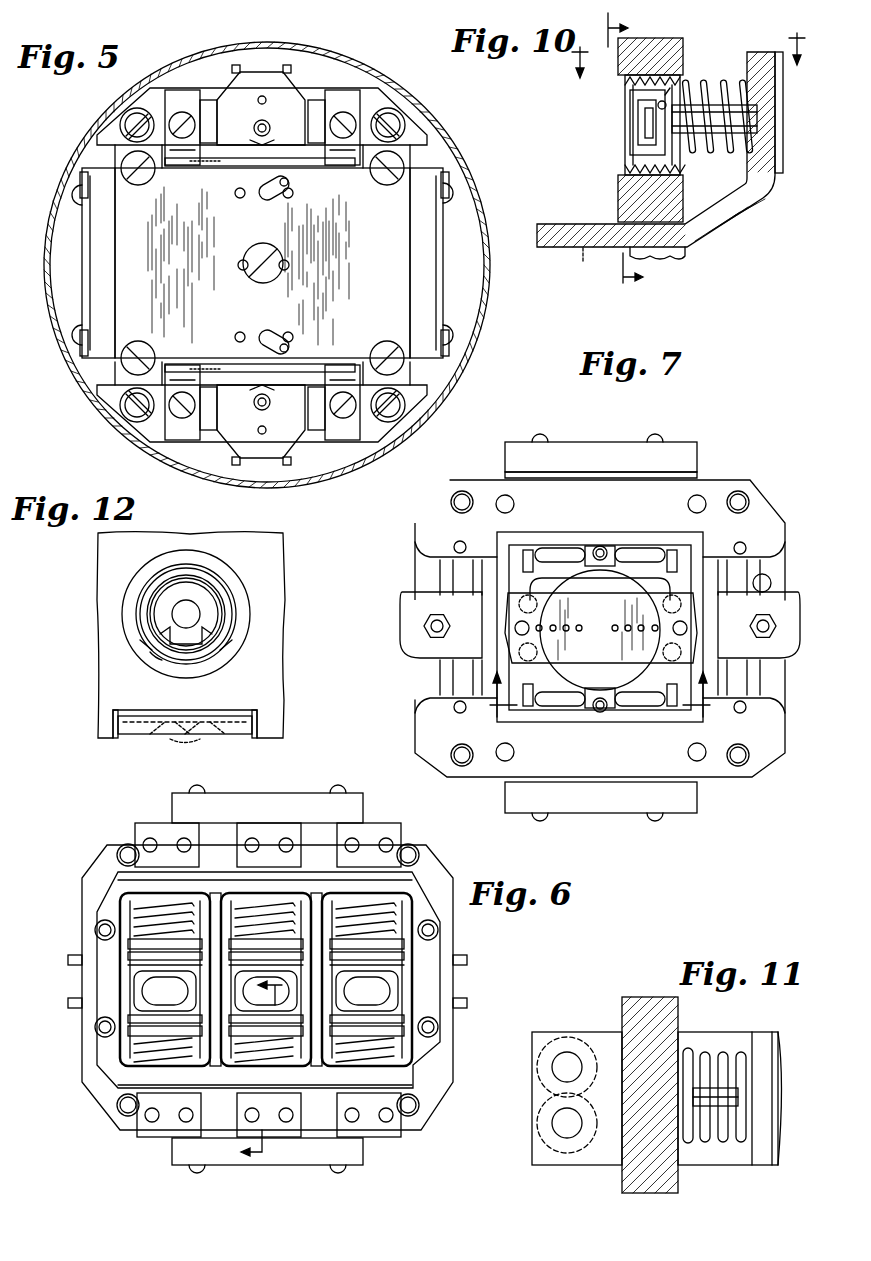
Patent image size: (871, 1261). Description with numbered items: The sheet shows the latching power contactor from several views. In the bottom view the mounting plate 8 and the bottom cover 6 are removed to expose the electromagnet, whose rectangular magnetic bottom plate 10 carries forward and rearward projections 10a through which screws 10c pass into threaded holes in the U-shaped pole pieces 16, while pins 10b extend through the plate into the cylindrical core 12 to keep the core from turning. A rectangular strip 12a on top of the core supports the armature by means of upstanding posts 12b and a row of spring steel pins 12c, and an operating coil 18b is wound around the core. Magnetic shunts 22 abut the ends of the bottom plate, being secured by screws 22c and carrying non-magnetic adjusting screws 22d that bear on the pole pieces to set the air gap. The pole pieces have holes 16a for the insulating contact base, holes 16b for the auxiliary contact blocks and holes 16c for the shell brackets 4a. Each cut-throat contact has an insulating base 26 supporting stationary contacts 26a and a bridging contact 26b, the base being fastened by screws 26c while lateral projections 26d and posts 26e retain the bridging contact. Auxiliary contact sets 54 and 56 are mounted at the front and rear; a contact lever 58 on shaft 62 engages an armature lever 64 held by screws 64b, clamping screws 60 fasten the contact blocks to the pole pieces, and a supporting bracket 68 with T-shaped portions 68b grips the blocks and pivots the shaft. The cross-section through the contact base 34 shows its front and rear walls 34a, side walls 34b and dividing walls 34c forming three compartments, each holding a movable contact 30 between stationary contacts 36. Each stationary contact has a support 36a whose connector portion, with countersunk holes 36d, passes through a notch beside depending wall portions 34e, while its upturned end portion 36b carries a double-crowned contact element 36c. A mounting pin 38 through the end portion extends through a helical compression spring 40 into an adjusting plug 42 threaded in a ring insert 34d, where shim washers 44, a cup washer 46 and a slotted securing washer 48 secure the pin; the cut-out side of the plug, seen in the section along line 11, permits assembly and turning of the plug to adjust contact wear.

In FIG. 5, the brackets 4a is at (105, 133).
In FIG. 5, the bottom cover 6 is at (486, 292).
In FIG. 7, the mounting plate 8 is at (600, 686).
In FIG. 5, the bottom plate 10 is at (188, 261).
In FIG. 6, the bottom plate 10 is at (271, 1067).
In FIG. 5, the projections 10a is at (118, 163).
In FIG. 5, the pins 10b is at (252, 272).
In FIG. 5, the screws 10c is at (140, 185).
In FIG. 7, the screws 10c is at (505, 500).
In FIG. 10, the section line 11- 11 is at (690, 47).
In FIG. 10, the magnetic core 12 is at (617, 146).
In FIG. 7, the strip 12a is at (612, 615).
In FIG. 7, the posts 12b is at (528, 632).
In FIG. 7, the spring steel pins 12c is at (628, 632).
In FIG. 5, the pole pieces 16 is at (356, 85).
In FIG. 7, the pole pieces 16 is at (785, 537).
In FIG. 6, the pole pieces 16 is at (98, 866).
In FIG. 7, the holes 16a is at (770, 583).
In FIG. 7, the holes 16b is at (458, 542).
In FIG. 7, the holes 16c is at (462, 494).
In FIG. 6, the holes 16c is at (120, 850).
In FIG. 7, the operating coil 18b is at (612, 588).
In FIG. 5, the magnetic shunts 22 is at (82, 265).
In FIG. 7, the magnetic shunts 22 is at (600, 442).
In FIG. 6, the magnetic shunts 22 is at (262, 793).
In FIG. 5, the screws 22c is at (80, 178).
In FIG. 5, the adjusting screws 22d is at (72, 195).
In FIG. 7, the adjusting screws 22d is at (540, 434).
In FIG. 6, the adjusting screws 22d is at (197, 790).
In FIG. 7, the insulating base 26 is at (497, 585).
In FIG. 7, the stationary contacts 26a is at (536, 548).
In FIG. 7, the bridging contact 26b is at (560, 708).
In FIG. 5, the screws 26c is at (240, 198).
In FIG. 7, the screws 26c is at (518, 650).
In FIG. 7, the lateral projections 26d is at (600, 545).
In FIG. 7, the posts 26e is at (625, 710).
In FIG. 6, the movable contacts 30 is at (150, 997).
In FIG. 6, the contact base 34 is at (98, 912).
In FIG. 6, the front and rear walls 34a is at (112, 975).
In FIG. 10, the side walls 34b is at (630, 208).
In FIG. 12, the side walls 34b is at (100, 560).
In FIG. 6, the side walls 34b is at (238, 893).
In FIG. 11, the side walls 34b is at (656, 1010).
In FIG. 6, the dividing walls 34c is at (316, 902).
In FIG. 10, the ring inserts 34d is at (632, 180).
In FIG. 12, the ring inserts 34d is at (123, 613).
In FIG. 10, the depending wall portions 34e is at (688, 254).
In FIG. 12, the depending wall portions 34e is at (100, 728).
In FIG. 10, the stationary contacts 36 is at (793, 228).
In FIG. 11, the stationary contacts 36 is at (785, 1045).
In FIG. 10, the contact support 36a is at (553, 225).
In FIG. 12, the contact support 36a is at (145, 735).
In FIG. 6, the contact support 36a is at (150, 826).
In FIG. 11, the contact support 36a is at (592, 1032).
In FIG. 10, the end portion 36b is at (762, 52).
In FIG. 11, the end portion 36b is at (760, 1035).
In FIG. 10, the contact element 36c is at (785, 170).
In FIG. 11, the contact element 36c is at (781, 1082).
In FIG. 10, the countersunk holes 36d is at (582, 252).
In FIG. 12, the countersunk holes 36d is at (200, 737).
In FIG. 11, the countersunk holes 36d is at (553, 1068).
In FIG. 10, the mounting pin 38 is at (718, 134).
In FIG. 12, the mounting pin 38 is at (192, 614).
In FIG. 11, the mounting pin 38 is at (728, 1060).
In FIG. 10, the helical compression spring 40 is at (720, 80).
In FIG. 11, the helical compression spring 40 is at (690, 1048).
In FIG. 10, the adjusting plug 42 is at (640, 86).
In FIG. 12, the adjusting plug 42 is at (220, 630).
In FIG. 10, the shim washers 44 is at (668, 98).
In FIG. 10, the cup washer 46 is at (650, 148).
In FIG. 12, the cup washer 46 is at (205, 645).
In FIG. 10, the slotted securing washer 48 is at (648, 105).
In FIG. 12, the slotted securing washer 48 is at (165, 640).
In FIG. 5, the set of auxiliary contacts 54 is at (257, 75).
In FIG. 7, the set of auxiliary contacts 54 is at (425, 597).
In FIG. 5, the set of auxiliary contacts 56 is at (265, 458).
In FIG. 7, the set of auxiliary contacts 56 is at (783, 630).
In FIG. 5, the contact lever 58 is at (270, 128).
In FIG. 5, the clamping screws 60 is at (183, 112).
In FIG. 5, the shaft 62 is at (259, 102).
In FIG. 7, the shaft 62 is at (424, 627).
In FIG. 5, the armature lever 64 is at (250, 168).
In FIG. 5, the screws 64b is at (208, 168).
In FIG. 5, the supporting bracket 68 is at (330, 92).
In FIG. 5, the T-shaped portions 68b is at (172, 95).